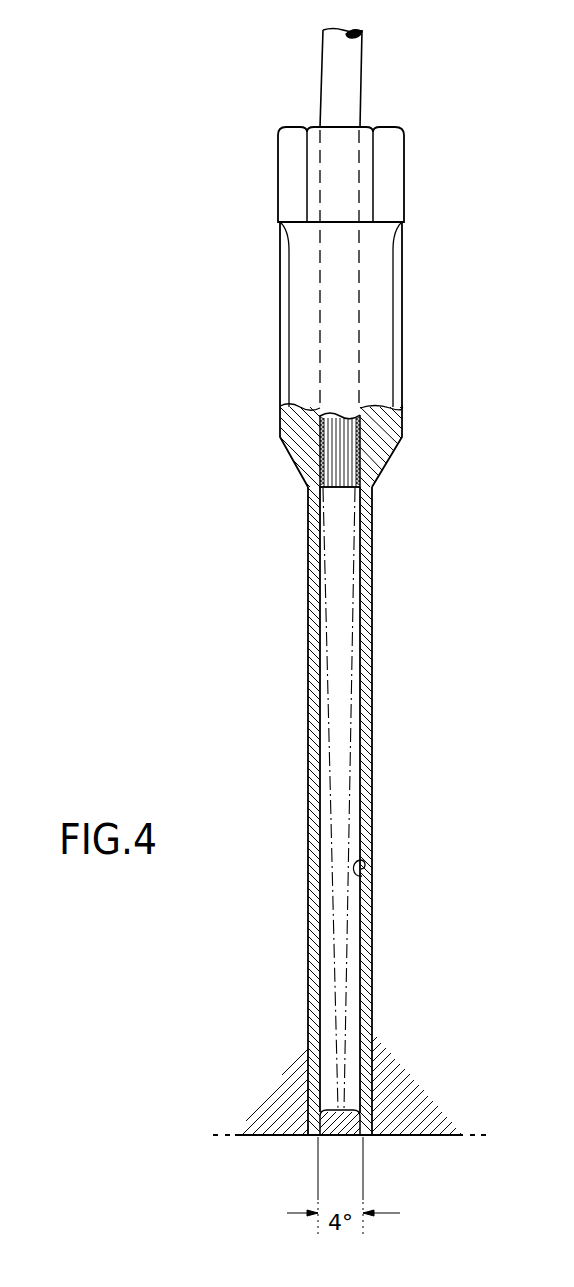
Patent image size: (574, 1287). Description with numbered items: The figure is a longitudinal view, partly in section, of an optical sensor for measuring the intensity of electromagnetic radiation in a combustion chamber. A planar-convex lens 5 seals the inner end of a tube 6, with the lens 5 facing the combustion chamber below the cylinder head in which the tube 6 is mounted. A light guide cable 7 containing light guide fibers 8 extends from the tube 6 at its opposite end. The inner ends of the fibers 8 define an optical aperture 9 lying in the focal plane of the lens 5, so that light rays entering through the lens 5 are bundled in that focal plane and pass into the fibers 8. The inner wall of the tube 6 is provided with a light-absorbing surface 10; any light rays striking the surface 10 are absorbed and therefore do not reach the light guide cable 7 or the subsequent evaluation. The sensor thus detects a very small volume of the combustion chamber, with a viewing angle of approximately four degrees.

The planar-convex lens 5 is at (330, 1127).
The tube 6 is at (308, 800).
The light guide cable 7 is at (331, 103).
The light guide fibers 8 is at (338, 458).
The optical aperture 9 is at (342, 488).
The light-absorbing surface 10 is at (362, 876).